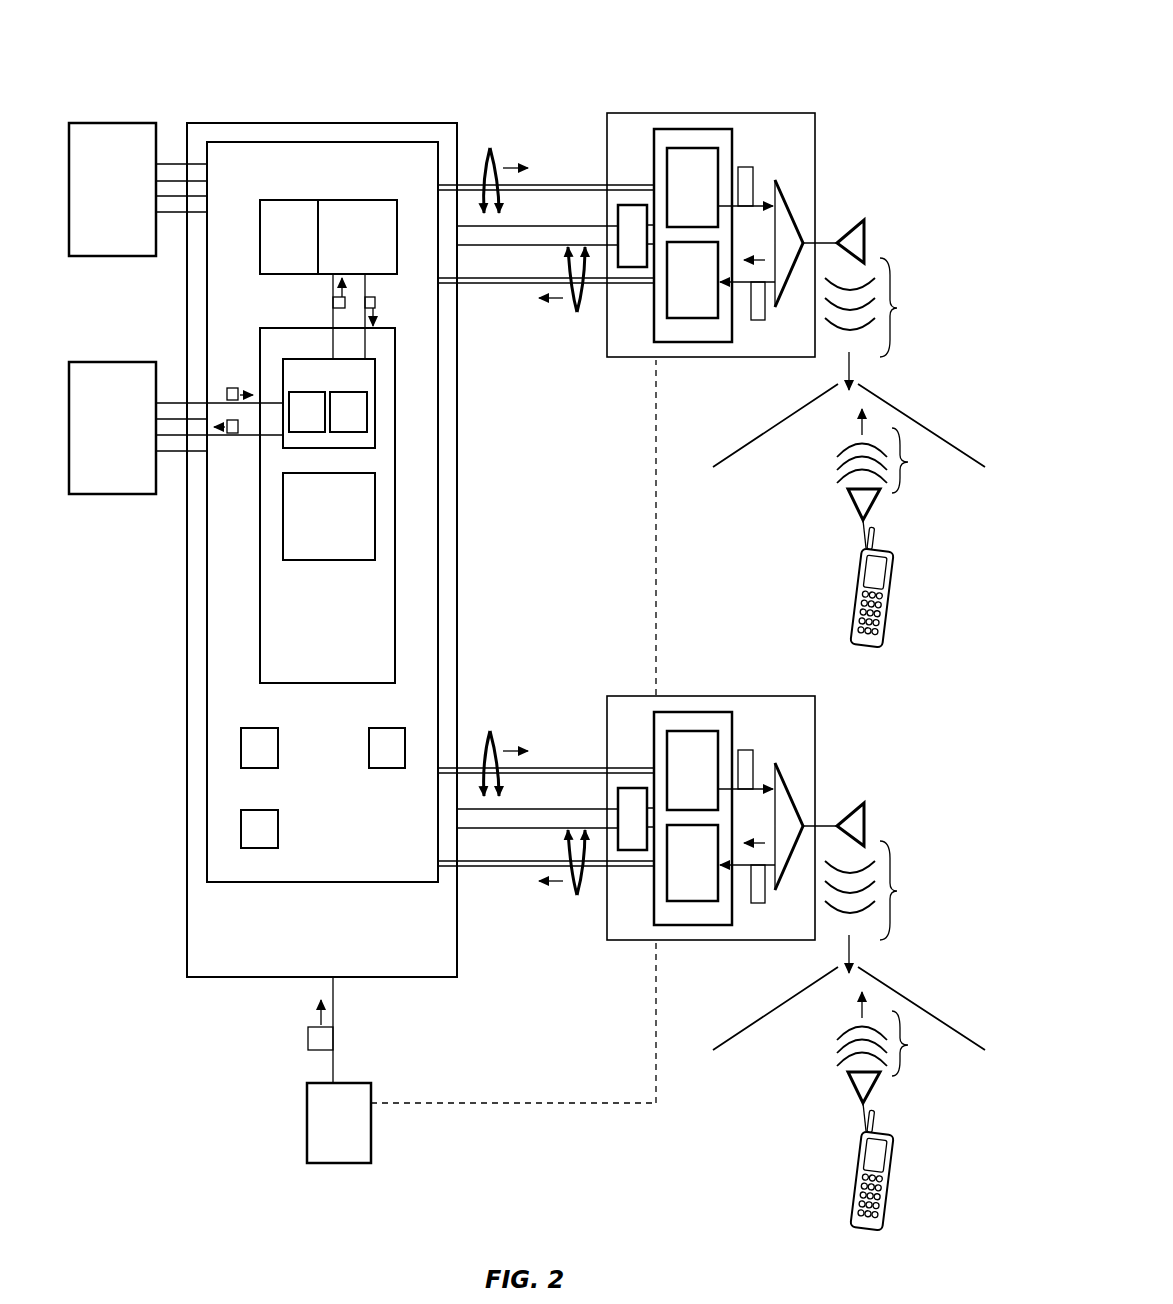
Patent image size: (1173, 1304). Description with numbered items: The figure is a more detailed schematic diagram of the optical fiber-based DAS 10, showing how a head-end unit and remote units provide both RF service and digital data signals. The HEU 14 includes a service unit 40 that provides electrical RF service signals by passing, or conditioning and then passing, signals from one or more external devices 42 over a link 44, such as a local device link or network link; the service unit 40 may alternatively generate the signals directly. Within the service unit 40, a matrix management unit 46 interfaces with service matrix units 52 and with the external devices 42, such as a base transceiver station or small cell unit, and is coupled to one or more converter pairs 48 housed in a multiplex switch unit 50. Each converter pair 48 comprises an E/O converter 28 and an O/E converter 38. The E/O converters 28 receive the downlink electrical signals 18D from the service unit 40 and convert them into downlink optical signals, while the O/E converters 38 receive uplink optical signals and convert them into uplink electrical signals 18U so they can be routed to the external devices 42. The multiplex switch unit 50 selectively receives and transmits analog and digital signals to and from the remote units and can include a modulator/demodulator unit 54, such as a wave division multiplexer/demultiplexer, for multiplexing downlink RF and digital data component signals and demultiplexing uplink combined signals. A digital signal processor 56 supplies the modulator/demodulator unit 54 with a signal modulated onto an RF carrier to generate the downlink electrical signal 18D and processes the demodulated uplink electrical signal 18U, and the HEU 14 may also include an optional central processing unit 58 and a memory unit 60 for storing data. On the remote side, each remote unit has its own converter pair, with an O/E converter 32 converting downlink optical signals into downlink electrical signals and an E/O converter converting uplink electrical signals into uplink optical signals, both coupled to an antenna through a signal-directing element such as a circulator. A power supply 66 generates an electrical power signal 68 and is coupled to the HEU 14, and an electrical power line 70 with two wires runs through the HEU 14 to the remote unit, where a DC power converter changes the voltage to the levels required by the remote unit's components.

The optical fiber-based distributed antenna system 10 is at (574, 66).
The head-end unit 14 is at (218, 123).
The uplink electrical signals 18U is at (310, 316).
The downlink electrical signals 18D is at (211, 466).
The E/O converter 28 is at (320, 422).
The O/E converter 32 is at (692, 770).
The O/E converter 38 is at (362, 422).
The service unit 40 is at (255, 176).
The external device 42 is at (127, 201).
The link 44 is at (170, 162).
The matrix management unit 46 is at (369, 249).
The converter pair 48 is at (318, 386).
The multiplex switch unit 50 is at (300, 356).
The service matrix unit 52 is at (304, 249).
The modulator/demodulator unit 54 is at (344, 524).
The digital signal processor 56 is at (273, 759).
The central processing unit 58 is at (400, 759).
The memory unit 60 is at (273, 840).
The power supply 66 is at (353, 1135).
The electrical power signal 68 is at (308, 1050).
The electrical power line 70 is at (335, 1078).